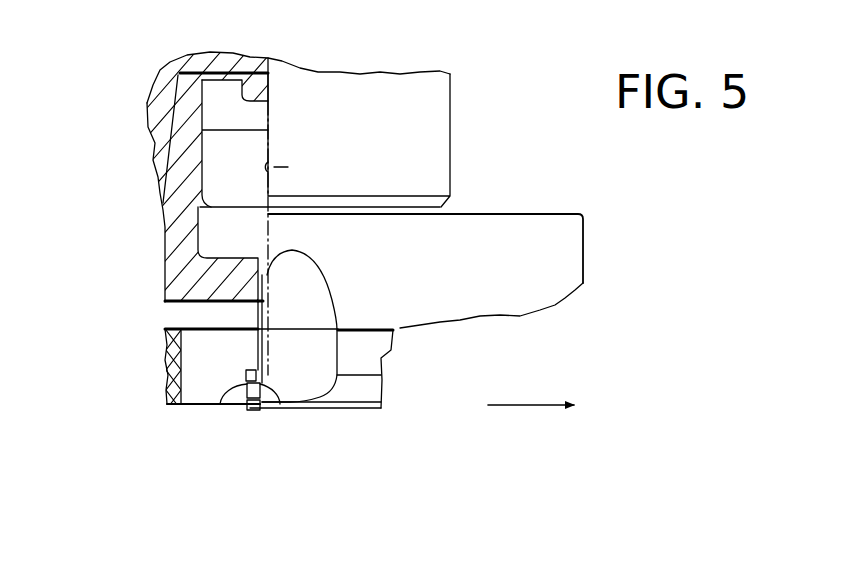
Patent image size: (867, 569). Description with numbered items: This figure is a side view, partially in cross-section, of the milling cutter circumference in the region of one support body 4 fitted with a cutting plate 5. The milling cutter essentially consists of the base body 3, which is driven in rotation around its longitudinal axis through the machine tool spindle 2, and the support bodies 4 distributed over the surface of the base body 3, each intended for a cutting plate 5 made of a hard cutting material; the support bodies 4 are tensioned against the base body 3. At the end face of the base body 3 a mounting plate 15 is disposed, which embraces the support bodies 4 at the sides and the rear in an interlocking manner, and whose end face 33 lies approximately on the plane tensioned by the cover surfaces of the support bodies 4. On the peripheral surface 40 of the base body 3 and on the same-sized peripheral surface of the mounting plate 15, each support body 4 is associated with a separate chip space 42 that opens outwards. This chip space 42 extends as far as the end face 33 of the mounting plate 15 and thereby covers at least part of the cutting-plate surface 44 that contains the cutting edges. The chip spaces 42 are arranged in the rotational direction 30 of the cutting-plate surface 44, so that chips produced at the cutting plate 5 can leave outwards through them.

The machine tool spindle 2 is at (390, 110).
The base body 3 is at (178, 249).
The support body 4 is at (204, 373).
The cutting plate 5 is at (238, 392).
The mounting plate 15 is at (164, 352).
The rotational direction 30 is at (525, 405).
The end face 33 is at (367, 410).
The peripheral surface 40 is at (585, 236).
The chip space 42 is at (302, 358).
The cutting-plate surface 44 is at (272, 404).